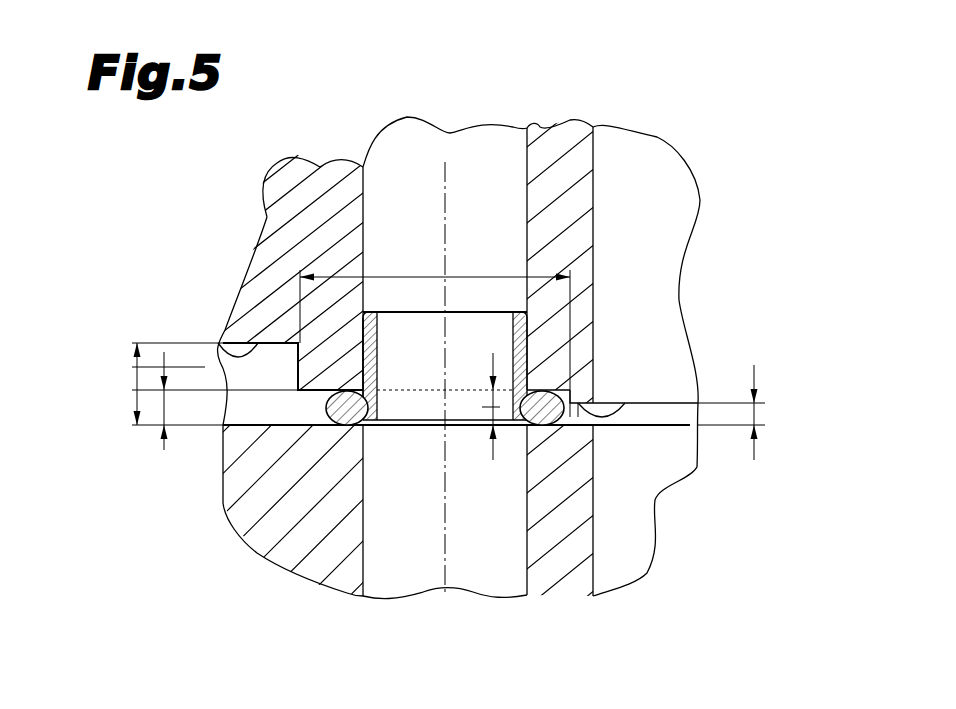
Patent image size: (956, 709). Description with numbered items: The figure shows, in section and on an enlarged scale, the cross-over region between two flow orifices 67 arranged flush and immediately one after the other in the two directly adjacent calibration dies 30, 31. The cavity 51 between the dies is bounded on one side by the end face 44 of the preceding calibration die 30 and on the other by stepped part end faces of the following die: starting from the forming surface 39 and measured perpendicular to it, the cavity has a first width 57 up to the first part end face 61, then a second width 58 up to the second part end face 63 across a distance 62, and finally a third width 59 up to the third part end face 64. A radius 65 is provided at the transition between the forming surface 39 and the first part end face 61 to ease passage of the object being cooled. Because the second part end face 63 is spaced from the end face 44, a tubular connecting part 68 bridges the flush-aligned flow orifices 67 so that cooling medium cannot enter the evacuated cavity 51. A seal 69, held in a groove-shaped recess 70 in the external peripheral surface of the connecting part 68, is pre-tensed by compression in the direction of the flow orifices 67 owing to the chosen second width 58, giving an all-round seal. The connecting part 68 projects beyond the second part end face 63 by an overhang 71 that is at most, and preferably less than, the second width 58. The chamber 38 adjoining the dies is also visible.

The calibration die 30 is at (570, 583).
The calibration die 31 is at (578, 267).
The cavity 38 is at (656, 292).
The forming surface 39 is at (605, 180).
The end face 44 is at (625, 425).
The cavity 51 is at (136, 366).
The width 57 is at (762, 418).
The width 58 is at (162, 396).
The width 59 is at (136, 383).
The first part end face 61 is at (625, 403).
The distance 62 is at (490, 265).
The second part end face 63 is at (223, 455).
The third part end face 64 is at (252, 369).
The radius 65 is at (609, 391).
The flow orifice 67 is at (525, 207).
The connecting part 68 is at (375, 340).
The seal 69 is at (316, 403).
The groove-shaped recess 70 is at (353, 427).
The overhang 71 is at (490, 405).